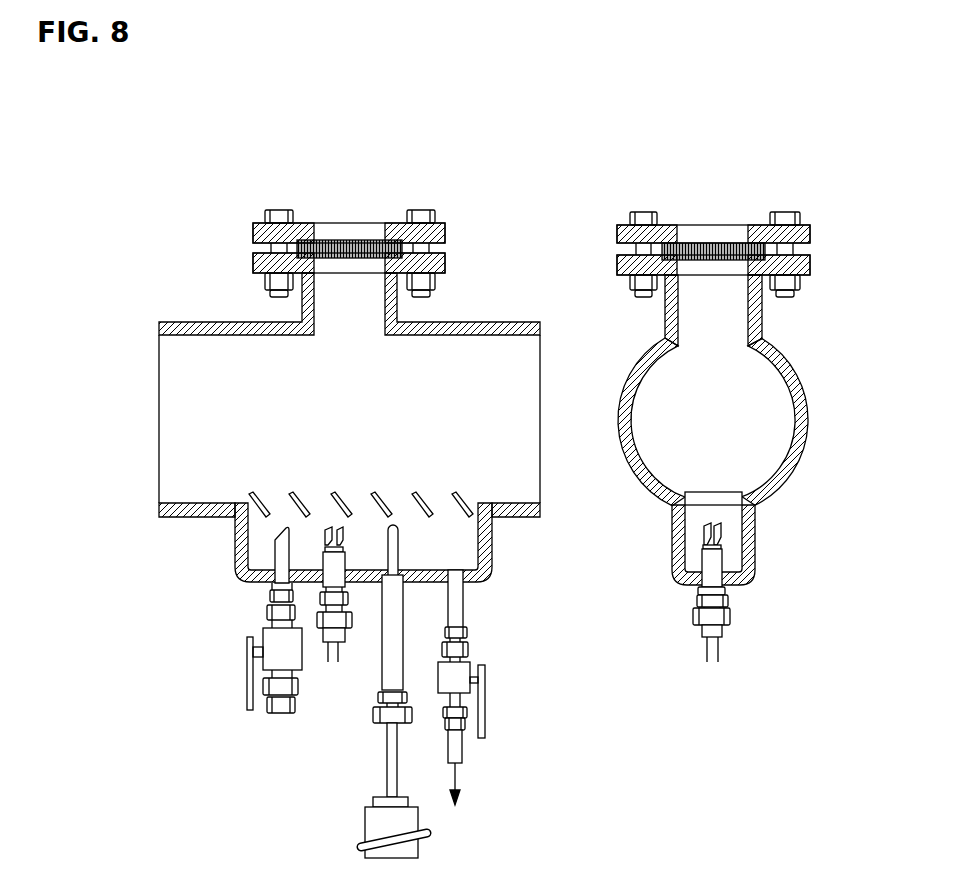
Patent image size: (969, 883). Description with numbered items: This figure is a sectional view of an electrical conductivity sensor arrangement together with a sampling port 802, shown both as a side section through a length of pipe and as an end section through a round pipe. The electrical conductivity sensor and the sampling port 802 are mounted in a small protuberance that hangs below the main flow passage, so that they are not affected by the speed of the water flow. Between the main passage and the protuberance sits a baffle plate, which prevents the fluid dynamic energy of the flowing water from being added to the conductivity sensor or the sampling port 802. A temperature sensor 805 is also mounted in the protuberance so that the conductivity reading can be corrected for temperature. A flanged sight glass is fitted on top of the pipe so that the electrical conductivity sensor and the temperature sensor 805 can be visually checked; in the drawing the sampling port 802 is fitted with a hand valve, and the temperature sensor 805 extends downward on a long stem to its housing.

The sampling port 802 is at (247, 650).
The temperature sensor 805 is at (387, 773).